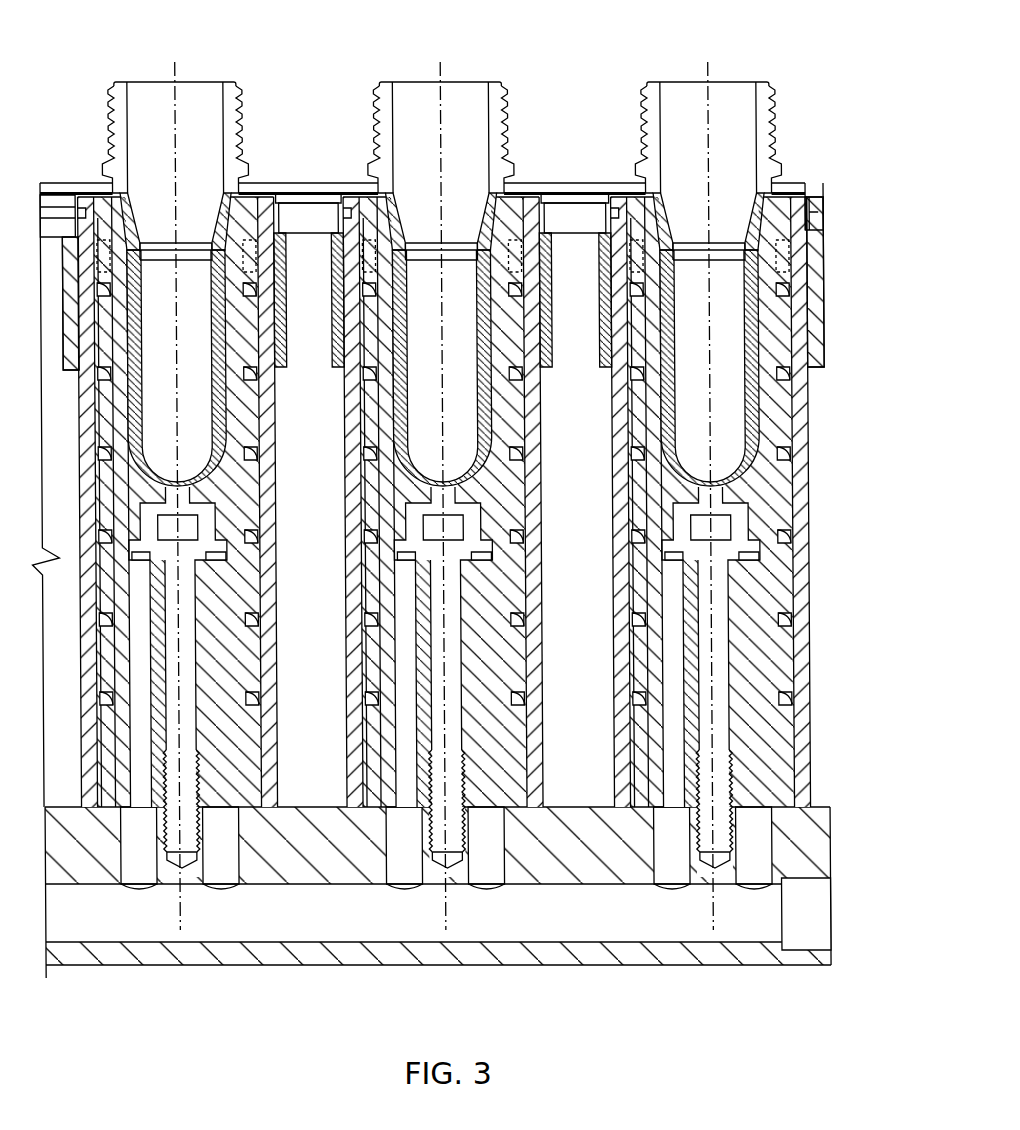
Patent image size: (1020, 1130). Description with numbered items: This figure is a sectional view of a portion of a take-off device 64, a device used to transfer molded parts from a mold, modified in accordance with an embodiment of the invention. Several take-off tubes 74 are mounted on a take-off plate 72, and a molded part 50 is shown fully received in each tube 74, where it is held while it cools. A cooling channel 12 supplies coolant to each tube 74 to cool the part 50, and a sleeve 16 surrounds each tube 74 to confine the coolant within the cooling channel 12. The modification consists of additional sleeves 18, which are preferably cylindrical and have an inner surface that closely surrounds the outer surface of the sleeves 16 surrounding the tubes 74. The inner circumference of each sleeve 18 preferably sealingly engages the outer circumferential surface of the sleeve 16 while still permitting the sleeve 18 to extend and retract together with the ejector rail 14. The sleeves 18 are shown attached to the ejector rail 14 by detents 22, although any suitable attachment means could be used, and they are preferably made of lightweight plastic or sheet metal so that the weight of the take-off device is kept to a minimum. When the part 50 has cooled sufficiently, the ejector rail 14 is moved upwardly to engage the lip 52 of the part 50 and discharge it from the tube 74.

The cooling channel 12 is at (788, 617).
The ejector rail 14 is at (808, 183).
The sleeve 16 is at (270, 495).
The sleeve 18 is at (330, 363).
The detent 22 is at (275, 198).
The molded part 50 is at (193, 81).
The lip 52 is at (244, 166).
The take-off device 64 is at (840, 659).
The take-off plate 72 is at (824, 842).
The take-off tube 74 is at (240, 572).